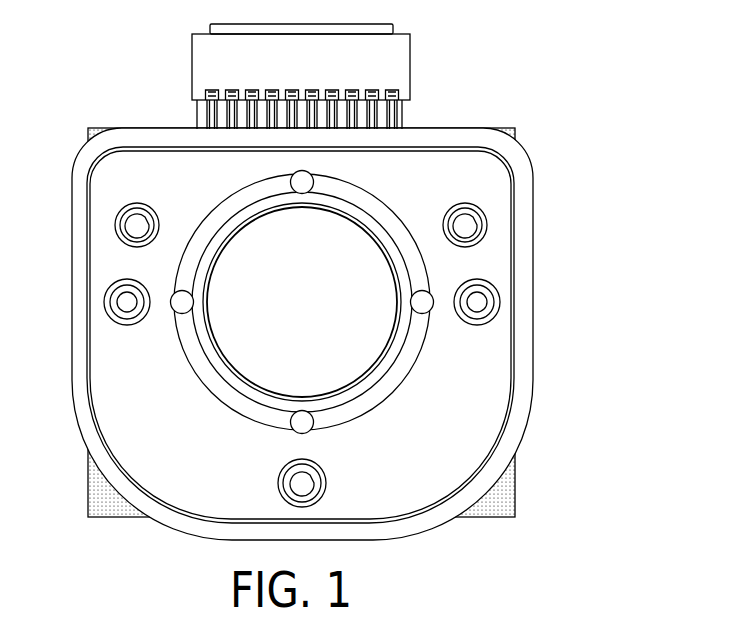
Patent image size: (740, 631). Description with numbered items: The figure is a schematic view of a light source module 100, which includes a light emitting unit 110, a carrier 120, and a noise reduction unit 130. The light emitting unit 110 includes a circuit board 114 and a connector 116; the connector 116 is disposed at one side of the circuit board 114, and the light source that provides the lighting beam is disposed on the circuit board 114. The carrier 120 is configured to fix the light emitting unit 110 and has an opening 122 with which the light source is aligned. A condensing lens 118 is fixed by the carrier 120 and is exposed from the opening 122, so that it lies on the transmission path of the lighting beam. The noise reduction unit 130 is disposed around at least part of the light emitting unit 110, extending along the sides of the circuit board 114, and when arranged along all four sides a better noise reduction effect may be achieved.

The light source module 100 is at (310, 279).
The light emitting unit 110 is at (359, 76).
The circuit board 114 is at (400, 117).
The connector 116 is at (398, 67).
The condensing lens 118 is at (360, 288).
The carrier 120 is at (333, 308).
The opening 122 is at (232, 232).
The noise reduction unit 130 is at (103, 493).